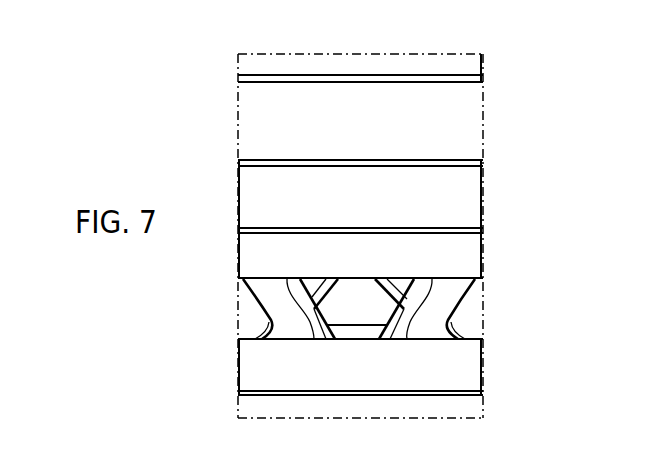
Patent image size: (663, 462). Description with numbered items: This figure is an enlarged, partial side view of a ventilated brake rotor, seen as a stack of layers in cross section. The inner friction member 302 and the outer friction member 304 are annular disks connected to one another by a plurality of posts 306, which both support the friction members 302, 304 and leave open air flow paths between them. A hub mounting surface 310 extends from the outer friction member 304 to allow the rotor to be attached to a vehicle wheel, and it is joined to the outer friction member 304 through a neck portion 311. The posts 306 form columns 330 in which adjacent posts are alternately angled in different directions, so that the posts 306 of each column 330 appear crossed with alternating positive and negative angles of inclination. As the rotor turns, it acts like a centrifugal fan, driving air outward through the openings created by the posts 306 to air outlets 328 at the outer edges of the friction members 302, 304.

The inner friction member 302 is at (477, 366).
The outer friction member 304 is at (470, 260).
The posts 306 is at (252, 302).
The hub mounting surface 310 is at (462, 73).
The neck portion 311 is at (470, 127).
The air outlets 328 is at (355, 326).
The columns 330 is at (232, 326).